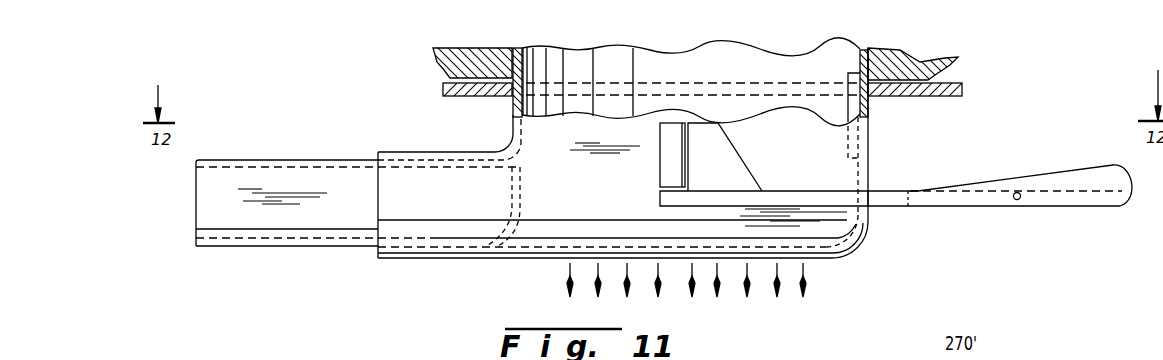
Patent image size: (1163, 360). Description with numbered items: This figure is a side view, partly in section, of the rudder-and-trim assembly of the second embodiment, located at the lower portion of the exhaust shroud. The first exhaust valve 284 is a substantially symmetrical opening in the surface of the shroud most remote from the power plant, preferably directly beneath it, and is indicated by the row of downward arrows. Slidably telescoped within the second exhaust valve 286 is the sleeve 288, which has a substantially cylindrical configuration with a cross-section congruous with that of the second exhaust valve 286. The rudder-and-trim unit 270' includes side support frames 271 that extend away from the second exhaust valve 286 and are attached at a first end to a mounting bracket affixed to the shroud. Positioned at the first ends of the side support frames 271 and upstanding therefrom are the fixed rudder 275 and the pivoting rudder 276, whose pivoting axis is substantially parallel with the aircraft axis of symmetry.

The sleeve 288 is at (245, 222).
The second exhaust valve 286 is at (397, 228).
The pivoting rudder 276 is at (670, 153).
The fixed rudder 275 is at (730, 174).
The side support frame 271 is at (802, 197).
The rudder-and-trim unit 270' is at (1000, 230).
The first exhaust valve 284 is at (753, 248).